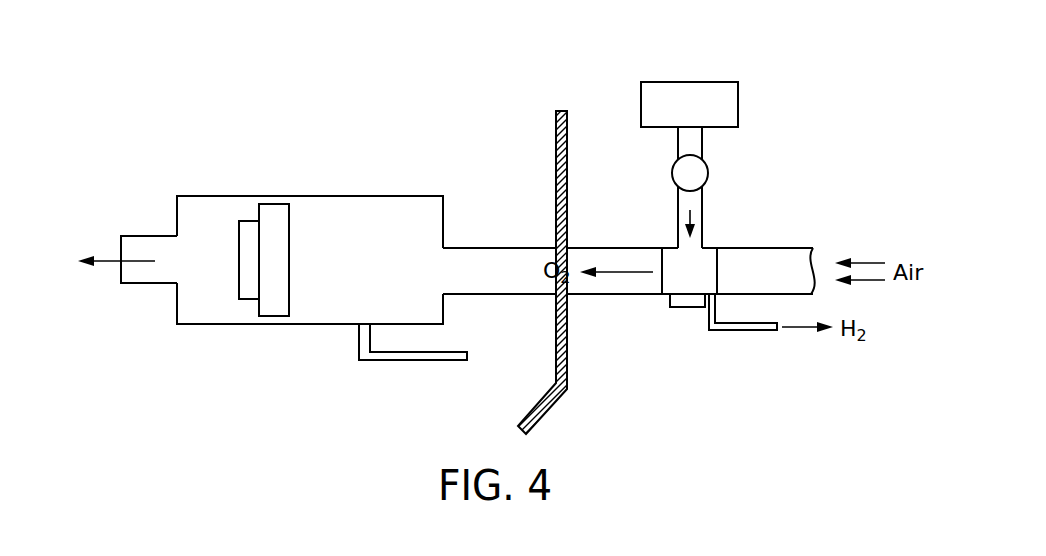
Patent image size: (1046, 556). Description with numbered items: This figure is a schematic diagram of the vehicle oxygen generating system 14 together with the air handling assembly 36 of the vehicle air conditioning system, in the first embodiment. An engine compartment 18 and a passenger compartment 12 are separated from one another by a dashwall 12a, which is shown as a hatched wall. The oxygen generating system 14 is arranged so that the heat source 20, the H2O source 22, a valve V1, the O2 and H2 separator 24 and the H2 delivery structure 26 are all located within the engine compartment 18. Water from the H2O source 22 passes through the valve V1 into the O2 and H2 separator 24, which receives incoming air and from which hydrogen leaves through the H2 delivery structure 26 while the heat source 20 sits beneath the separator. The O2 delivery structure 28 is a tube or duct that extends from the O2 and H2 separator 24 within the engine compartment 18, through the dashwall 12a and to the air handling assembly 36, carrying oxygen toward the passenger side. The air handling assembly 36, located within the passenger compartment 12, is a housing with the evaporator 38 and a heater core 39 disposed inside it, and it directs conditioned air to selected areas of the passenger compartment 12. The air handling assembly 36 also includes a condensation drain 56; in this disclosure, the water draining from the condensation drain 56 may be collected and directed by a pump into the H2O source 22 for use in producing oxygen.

The passenger compartment 12 is at (504, 152).
The dashwall 12a is at (568, 155).
The vehicle oxygen generating system 14 is at (722, 27).
The engine compartment 18 is at (613, 142).
The heat source 20 is at (682, 308).
The H2O source 22 is at (738, 103).
The O2 and H2 separator 24 is at (698, 273).
The H2 delivery structure 26 is at (745, 331).
The O2 delivery structure 28 is at (598, 295).
The air handling assembly 36 is at (365, 196).
The evaporator 38 is at (275, 222).
The heater core 39 is at (248, 243).
The condensation drain 56 is at (418, 363).
The valve V1 is at (695, 173).